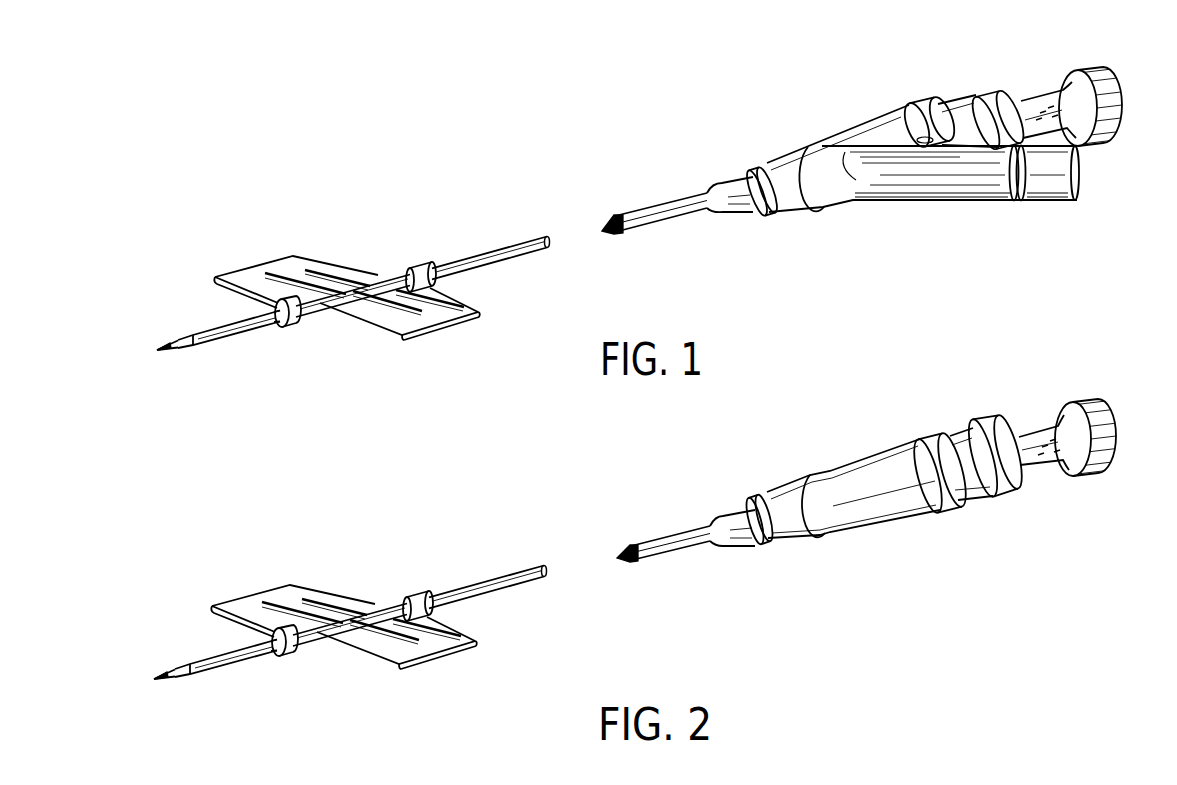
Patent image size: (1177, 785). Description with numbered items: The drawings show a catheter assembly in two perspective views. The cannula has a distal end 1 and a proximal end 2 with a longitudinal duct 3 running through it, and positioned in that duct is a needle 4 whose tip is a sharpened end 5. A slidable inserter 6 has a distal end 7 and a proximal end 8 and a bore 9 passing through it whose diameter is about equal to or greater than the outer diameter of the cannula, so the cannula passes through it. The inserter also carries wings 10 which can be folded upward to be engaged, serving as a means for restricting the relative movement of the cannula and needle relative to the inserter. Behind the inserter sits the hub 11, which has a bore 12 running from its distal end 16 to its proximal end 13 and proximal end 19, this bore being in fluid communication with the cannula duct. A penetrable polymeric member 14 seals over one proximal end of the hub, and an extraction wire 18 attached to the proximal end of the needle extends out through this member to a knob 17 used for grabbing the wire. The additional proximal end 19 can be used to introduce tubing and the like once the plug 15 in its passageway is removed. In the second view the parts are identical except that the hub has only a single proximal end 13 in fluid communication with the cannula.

In FIG. 1, the cannula distal end 1 is at (318, 290).
In FIG. 2, the cannula distal end 1 is at (326, 633).
In FIG. 1, the cannula proximal end 2 is at (866, 163).
In FIG. 2, the cannula proximal end 2 is at (856, 494).
In FIG. 1, the longitudinal duct 3 is at (612, 223).
In FIG. 2, the longitudinal duct 3 is at (628, 553).
In FIG. 1, the needle 4 is at (229, 330).
In FIG. 2, the needle 4 is at (226, 659).
In FIG. 1, the sharpened end 5 is at (167, 346).
In FIG. 2, the sharpened end 5 is at (164, 675).
In FIG. 1, the inserter 6 is at (423, 277).
In FIG. 2, the inserter 6 is at (420, 606).
In FIG. 1, the distal end 7 is at (288, 311).
In FIG. 2, the distal end 7 is at (285, 640).
In FIG. 1, the proximal end 8 is at (421, 277).
In FIG. 2, the proximal end 8 is at (418, 606).
In FIG. 1, the bore 9 is at (277, 317).
In FIG. 2, the bore 9 is at (274, 646).
In FIG. 1, the wings 10 is at (205, 347).
In FIG. 2, the wings 10 is at (201, 685).
In FIG. 1, the hub 11 is at (849, 212).
In FIG. 2, the hub 11 is at (877, 525).
In FIG. 1, the bore 12 is at (736, 181).
In FIG. 2, the bore 12 is at (738, 514).
In FIG. 1, the proximal end 13 is at (908, 106).
In FIG. 2, the proximal end 13 is at (914, 444).
In FIG. 1, the penetrable polymeric member 14 is at (975, 98).
In FIG. 2, the penetrable polymeric member 14 is at (988, 456).
In FIG. 1, the plug 15 is at (1053, 201).
In FIG. 1, the distal end 16 is at (768, 168).
In FIG. 2, the distal end 16 is at (768, 497).
In FIG. 1, the knob 17 is at (1113, 90).
In FIG. 2, the knob 17 is at (1084, 400).
In FIG. 1, the extraction wire 18 is at (1037, 100).
In FIG. 2, the extraction wire 18 is at (1033, 430).
In FIG. 1, the proximal end 19 is at (996, 199).